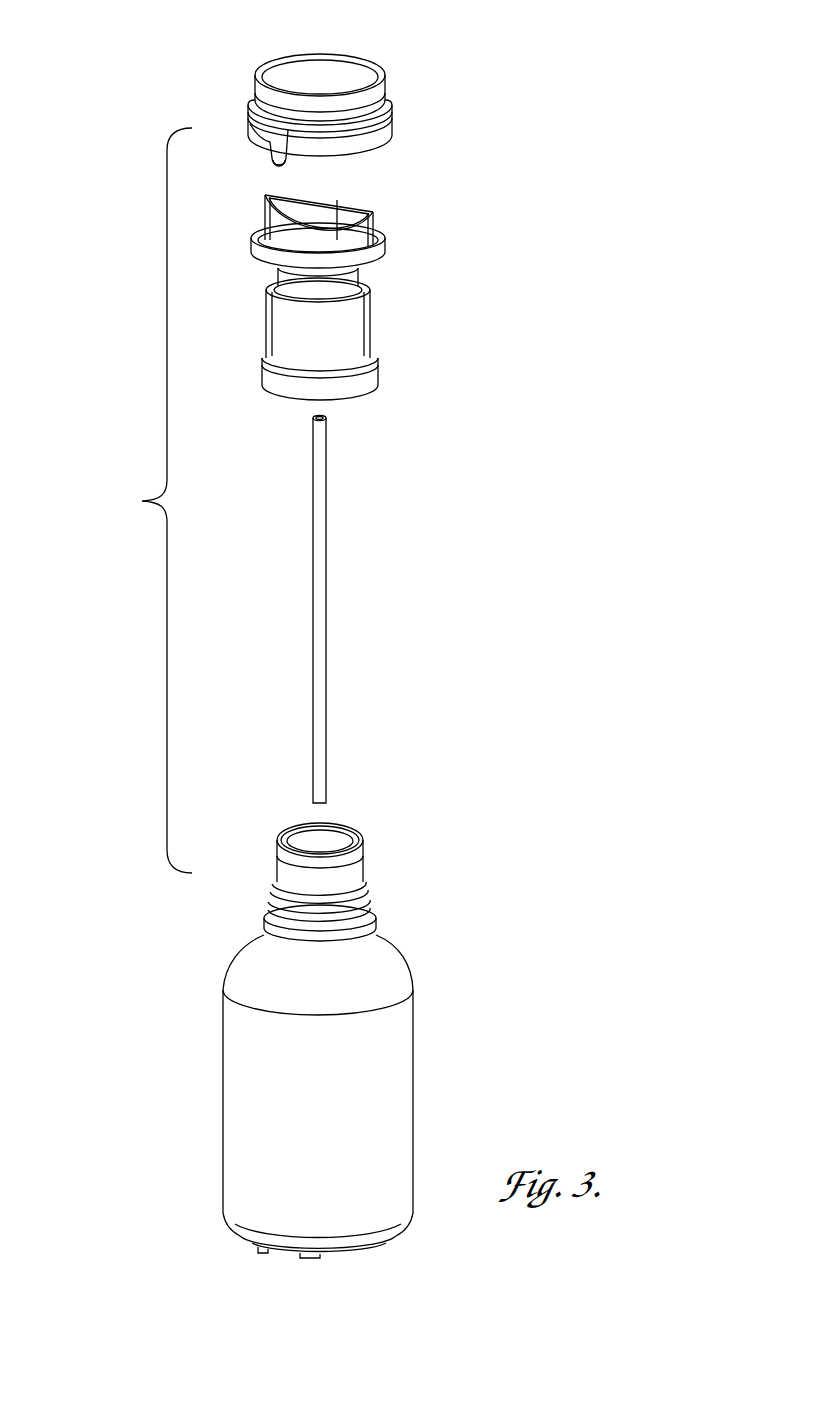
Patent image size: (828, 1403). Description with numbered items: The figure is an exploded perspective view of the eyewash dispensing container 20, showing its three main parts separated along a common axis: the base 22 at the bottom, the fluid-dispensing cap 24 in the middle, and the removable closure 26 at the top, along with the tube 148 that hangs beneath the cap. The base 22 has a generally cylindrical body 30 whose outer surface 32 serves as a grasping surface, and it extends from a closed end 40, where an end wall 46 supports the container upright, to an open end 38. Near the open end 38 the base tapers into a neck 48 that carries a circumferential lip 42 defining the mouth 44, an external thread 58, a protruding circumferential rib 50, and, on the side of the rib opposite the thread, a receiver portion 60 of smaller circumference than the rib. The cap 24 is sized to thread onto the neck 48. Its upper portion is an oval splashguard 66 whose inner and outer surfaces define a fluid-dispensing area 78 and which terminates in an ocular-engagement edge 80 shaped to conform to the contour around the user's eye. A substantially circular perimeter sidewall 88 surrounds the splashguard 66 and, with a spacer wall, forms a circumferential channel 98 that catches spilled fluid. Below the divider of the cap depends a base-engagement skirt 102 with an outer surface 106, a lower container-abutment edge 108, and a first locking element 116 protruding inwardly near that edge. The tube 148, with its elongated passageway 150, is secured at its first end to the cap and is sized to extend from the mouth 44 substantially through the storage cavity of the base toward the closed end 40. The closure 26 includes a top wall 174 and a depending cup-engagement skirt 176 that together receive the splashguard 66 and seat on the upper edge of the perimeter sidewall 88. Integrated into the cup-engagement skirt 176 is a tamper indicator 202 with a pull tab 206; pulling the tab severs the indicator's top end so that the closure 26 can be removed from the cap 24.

The eyewash dispensing container 20 is at (130, 322).
The base 22 is at (319, 1017).
The fluid-dispensing cap 24 is at (328, 294).
The closure 26 is at (342, 100).
The body 30 is at (276, 1101).
The outer surface 32 is at (233, 1118).
The open end 38 is at (329, 857).
The closed end 40 is at (319, 1239).
The circumferential lip 42 is at (282, 835).
The mouth 44 is at (340, 842).
The end wall 46 is at (248, 1250).
The neck 48 is at (365, 872).
The circumferential rib 50 is at (378, 918).
The external thread 58 is at (275, 906).
The receiver portion 60 is at (278, 938).
The splashguard 66 is at (361, 206).
The fluid-dispensing area 78 is at (318, 212).
The ocular-engagement edge 80 is at (368, 206).
The perimeter sidewall 88 is at (385, 252).
The circumferential channel 98 is at (258, 234).
The base-engagement skirt 102 is at (268, 312).
The outer surface 106 is at (285, 340).
The container-abutment edge 108 is at (365, 393).
The first locking element 116 is at (370, 387).
The tube 148 is at (367, 610).
The elongated passageway 150 is at (326, 418).
The top wall 174 is at (335, 62).
The cup-engagement skirt 176 is at (395, 120).
The tamper indicator 202 is at (258, 135).
The pull tab 206 is at (280, 163).